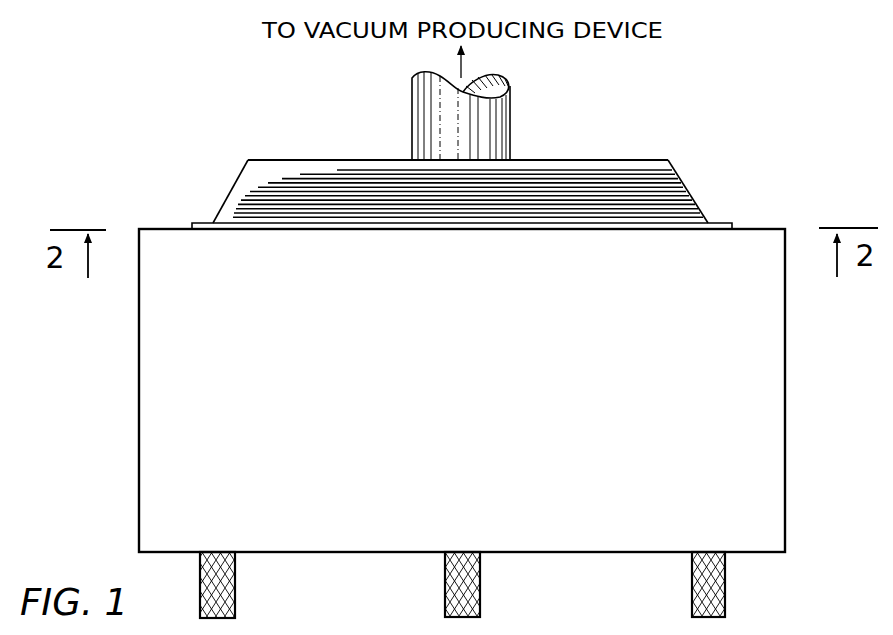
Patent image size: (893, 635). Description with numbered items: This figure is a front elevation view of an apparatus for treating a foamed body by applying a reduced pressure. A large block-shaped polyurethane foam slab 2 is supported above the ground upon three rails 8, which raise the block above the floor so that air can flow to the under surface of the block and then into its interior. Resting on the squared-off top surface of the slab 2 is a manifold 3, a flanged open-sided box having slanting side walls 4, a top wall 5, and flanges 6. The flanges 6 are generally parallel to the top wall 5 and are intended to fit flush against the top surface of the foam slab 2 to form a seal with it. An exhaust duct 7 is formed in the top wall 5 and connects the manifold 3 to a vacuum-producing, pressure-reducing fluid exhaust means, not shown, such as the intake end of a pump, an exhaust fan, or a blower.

The polyurethane foam slab 2 is at (468, 393).
The manifold 3 is at (436, 163).
The slanting side walls 4 is at (230, 195).
The top wall 5 is at (325, 160).
The flanges 6 is at (716, 222).
The exhaust duct 7 is at (497, 119).
The rails 8 is at (235, 589).